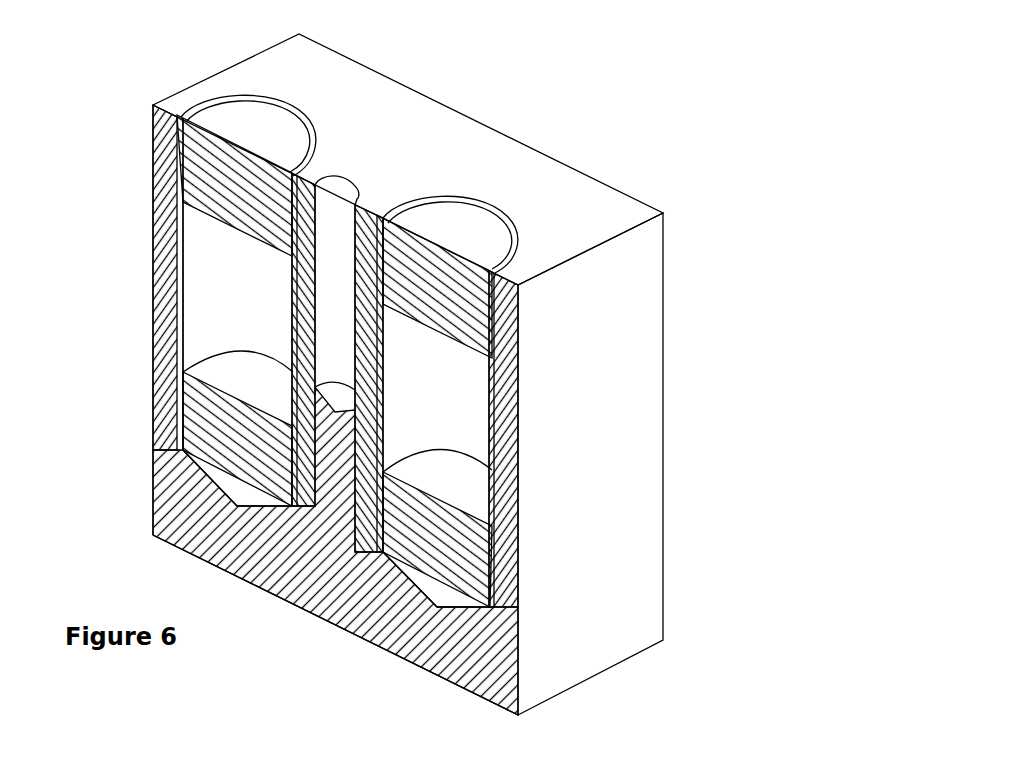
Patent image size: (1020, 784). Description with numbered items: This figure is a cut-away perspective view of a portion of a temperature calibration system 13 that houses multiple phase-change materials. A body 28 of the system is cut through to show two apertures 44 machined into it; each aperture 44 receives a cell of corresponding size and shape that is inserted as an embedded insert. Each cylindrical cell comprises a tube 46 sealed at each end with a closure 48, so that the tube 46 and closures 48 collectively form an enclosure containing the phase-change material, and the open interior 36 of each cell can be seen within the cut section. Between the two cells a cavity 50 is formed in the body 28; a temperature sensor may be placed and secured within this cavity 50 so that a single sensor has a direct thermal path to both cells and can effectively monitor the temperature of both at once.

The temperature calibration system 13 is at (473, 52).
The body 28 is at (311, 619).
The interior 36 is at (200, 272).
The aperture 44 is at (201, 483).
The tube 46 is at (288, 136).
The closure 48 is at (285, 150).
The cavity 50 is at (339, 176).